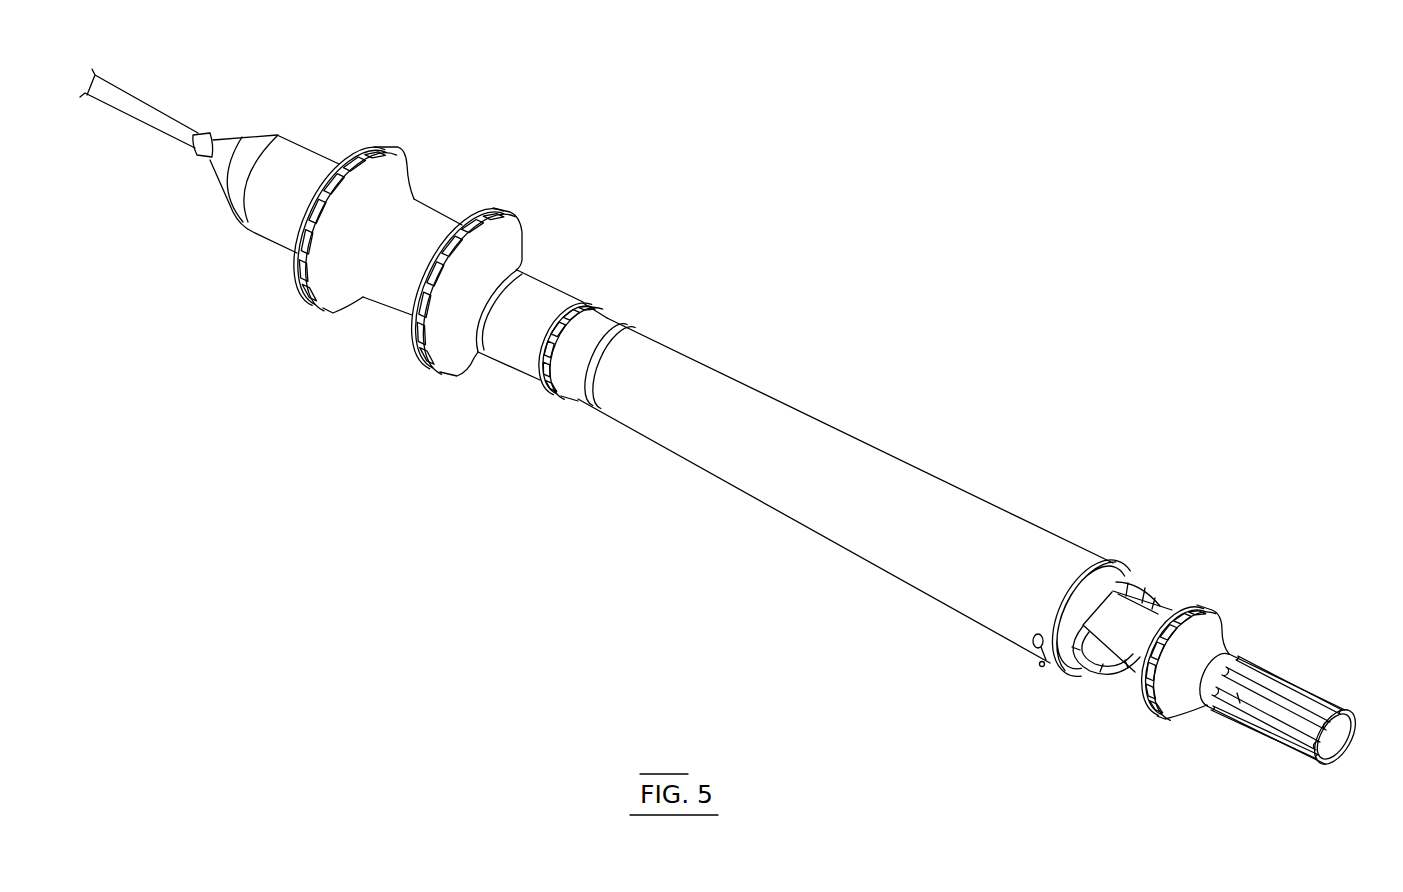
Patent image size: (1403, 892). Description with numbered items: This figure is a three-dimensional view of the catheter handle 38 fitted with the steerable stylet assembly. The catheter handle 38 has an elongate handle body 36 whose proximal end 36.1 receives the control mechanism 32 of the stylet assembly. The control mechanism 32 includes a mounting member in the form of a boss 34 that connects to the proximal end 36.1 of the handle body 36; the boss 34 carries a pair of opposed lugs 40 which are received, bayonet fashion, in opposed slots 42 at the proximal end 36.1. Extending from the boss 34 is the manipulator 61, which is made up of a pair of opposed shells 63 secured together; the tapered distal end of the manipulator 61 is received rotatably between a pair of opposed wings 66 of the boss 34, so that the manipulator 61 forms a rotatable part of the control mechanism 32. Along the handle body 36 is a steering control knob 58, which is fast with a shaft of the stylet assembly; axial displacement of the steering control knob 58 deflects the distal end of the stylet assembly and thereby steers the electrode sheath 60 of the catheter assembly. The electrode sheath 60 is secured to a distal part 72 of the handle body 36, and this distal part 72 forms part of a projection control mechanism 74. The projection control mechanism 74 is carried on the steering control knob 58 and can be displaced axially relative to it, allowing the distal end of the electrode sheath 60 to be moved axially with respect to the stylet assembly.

The control mechanism 32 is at (1262, 674).
The boss 34 is at (1130, 583).
The handle body 36 is at (897, 480).
The proximal end 36.1 is at (1107, 563).
The catheter handle 38 is at (889, 358).
The lugs 40 is at (1036, 650).
The slots 42 is at (1040, 667).
The steering control knob 58 is at (500, 212).
The electrode sheath 60 is at (168, 90).
The manipulator 61 is at (1296, 713).
The shells 63 is at (1347, 717).
The wings 66 is at (1153, 603).
The distal part 72 is at (237, 217).
The projection control mechanism 74 is at (380, 153).